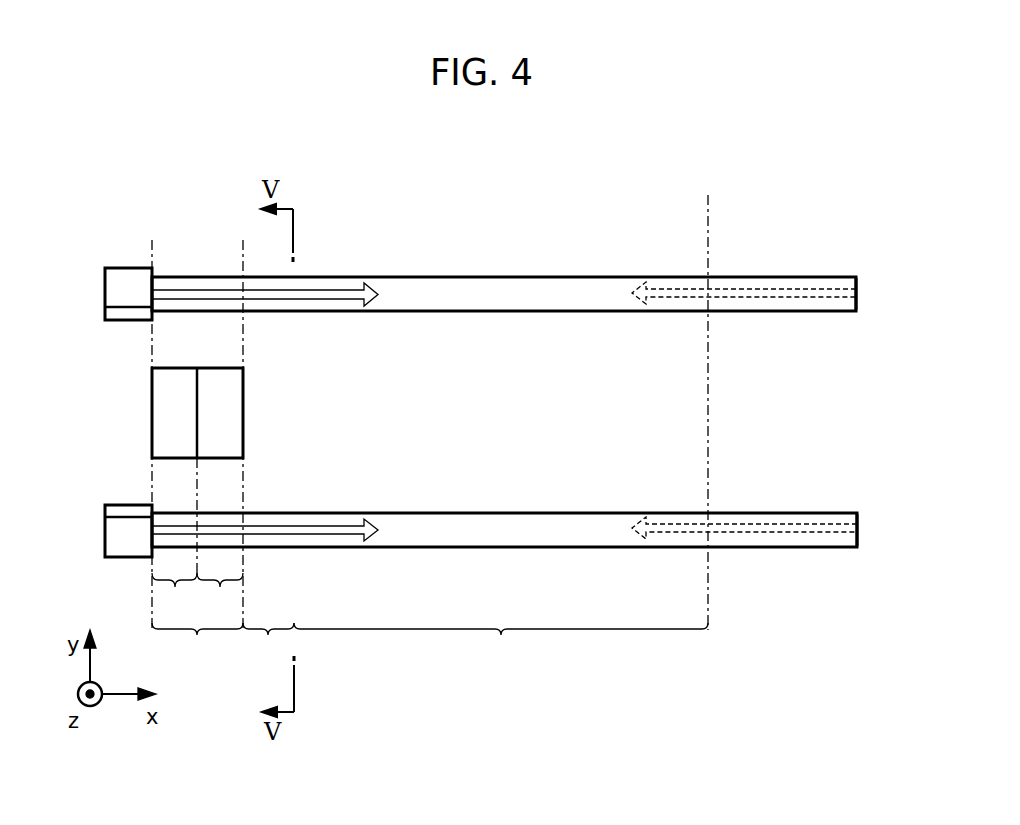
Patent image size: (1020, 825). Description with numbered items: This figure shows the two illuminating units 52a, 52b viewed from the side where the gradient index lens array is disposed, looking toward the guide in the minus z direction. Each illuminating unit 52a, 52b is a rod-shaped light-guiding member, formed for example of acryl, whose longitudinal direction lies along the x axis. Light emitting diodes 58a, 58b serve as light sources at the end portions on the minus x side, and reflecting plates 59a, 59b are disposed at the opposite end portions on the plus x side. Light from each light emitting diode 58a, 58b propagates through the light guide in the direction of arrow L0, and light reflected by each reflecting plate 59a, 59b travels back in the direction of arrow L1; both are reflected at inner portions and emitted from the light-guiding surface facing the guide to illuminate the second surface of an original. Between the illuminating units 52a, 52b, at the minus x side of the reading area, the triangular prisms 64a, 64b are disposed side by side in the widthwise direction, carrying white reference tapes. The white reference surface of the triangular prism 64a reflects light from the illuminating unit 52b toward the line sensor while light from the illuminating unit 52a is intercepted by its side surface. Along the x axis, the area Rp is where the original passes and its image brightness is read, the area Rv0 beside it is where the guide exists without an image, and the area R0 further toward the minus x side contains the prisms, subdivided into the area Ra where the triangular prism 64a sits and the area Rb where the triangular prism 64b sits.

The light emitting diode 58a is at (120, 560).
The light emitting diode 58b is at (133, 275).
The illuminating unit 52a is at (480, 534).
The illuminating unit 52b is at (476, 290).
The reflecting plate 59a is at (853, 516).
The reflecting plate 59b is at (852, 283).
The triangular prism 64a is at (155, 413).
The triangular prism 64b is at (215, 375).
The arrow L0 is at (345, 277).
The arrow L1 is at (662, 290).
The area Ra is at (174, 595).
The area Rb is at (220, 595).
The area R0 is at (197, 646).
The area Rv0 is at (268, 646).
The area Rp is at (501, 646).